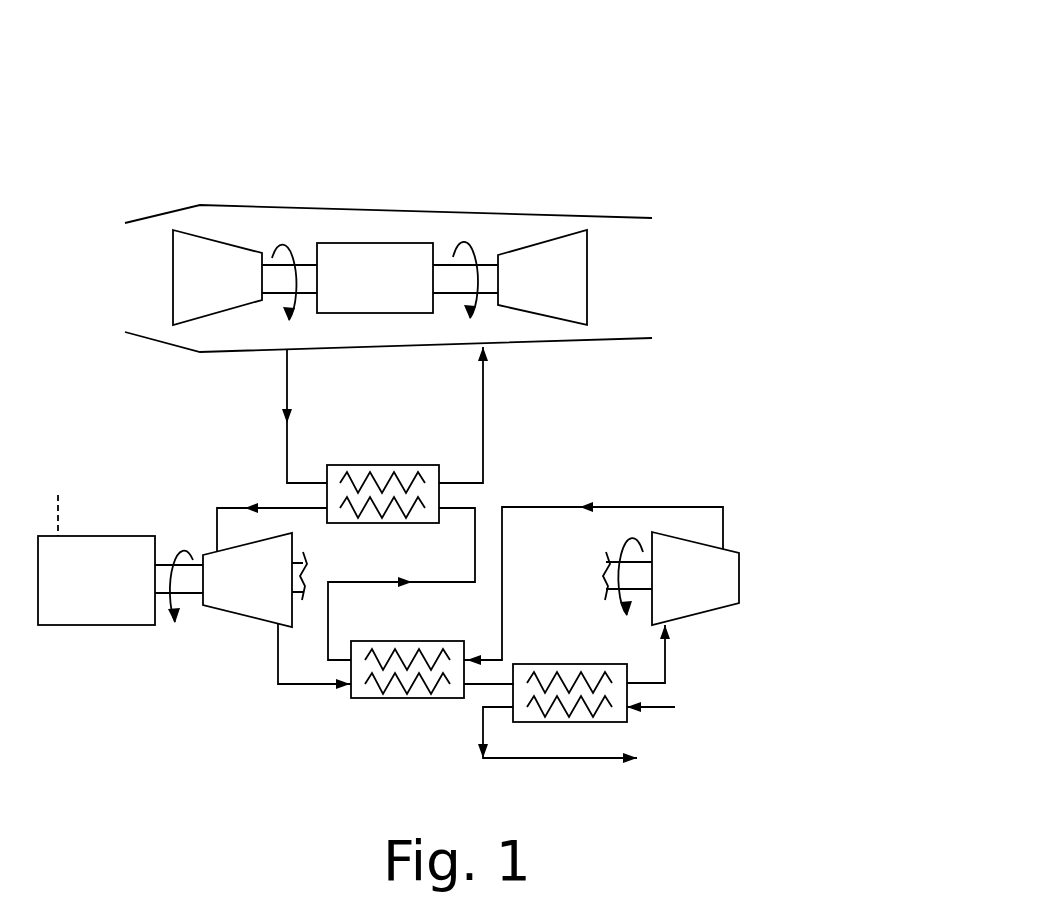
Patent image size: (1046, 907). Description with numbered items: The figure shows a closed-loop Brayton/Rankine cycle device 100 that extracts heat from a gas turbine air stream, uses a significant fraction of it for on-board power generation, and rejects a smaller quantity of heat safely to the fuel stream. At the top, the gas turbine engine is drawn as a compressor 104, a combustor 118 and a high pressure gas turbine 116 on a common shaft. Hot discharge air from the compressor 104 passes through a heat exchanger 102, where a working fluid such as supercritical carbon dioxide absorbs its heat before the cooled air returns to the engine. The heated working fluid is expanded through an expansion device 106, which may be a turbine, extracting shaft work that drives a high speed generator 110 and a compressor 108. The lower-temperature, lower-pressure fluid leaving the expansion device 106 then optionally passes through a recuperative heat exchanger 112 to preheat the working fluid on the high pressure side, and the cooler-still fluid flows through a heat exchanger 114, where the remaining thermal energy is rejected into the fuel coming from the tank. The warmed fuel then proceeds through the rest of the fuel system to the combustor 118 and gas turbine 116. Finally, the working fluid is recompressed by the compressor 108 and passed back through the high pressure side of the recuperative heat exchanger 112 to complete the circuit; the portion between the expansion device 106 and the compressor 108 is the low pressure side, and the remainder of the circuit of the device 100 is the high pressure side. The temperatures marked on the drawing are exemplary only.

The closed-loop Brayton/Rankine cycle device 100 is at (298, 62).
The heat exchanger 102 is at (389, 466).
The compressor 104 is at (220, 238).
The expansion device 106 is at (255, 580).
The compressor, pump or turbo pump 108 is at (711, 592).
The high speed generator 110 is at (96, 560).
The recuperative heat exchanger 112 is at (411, 641).
The heat exchanger 114 is at (581, 667).
The gas turbine 116 is at (552, 235).
The combustor 118 is at (375, 237).